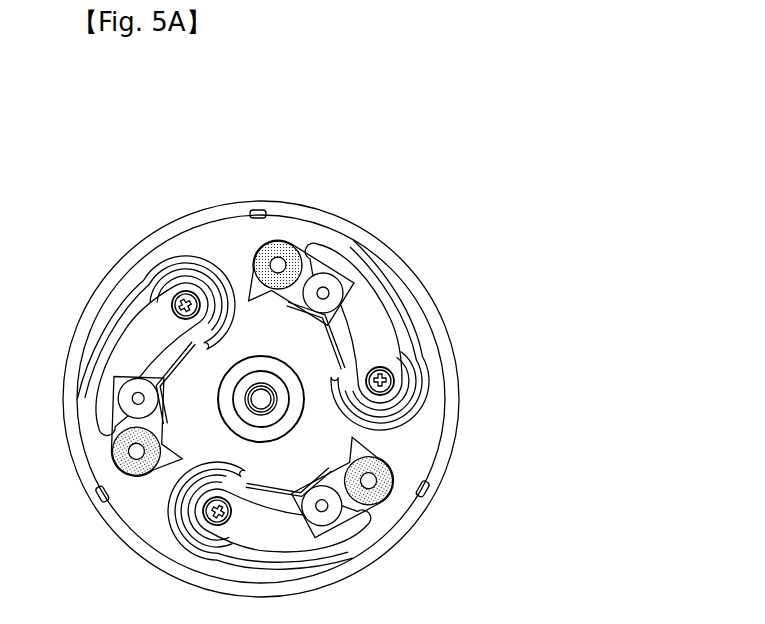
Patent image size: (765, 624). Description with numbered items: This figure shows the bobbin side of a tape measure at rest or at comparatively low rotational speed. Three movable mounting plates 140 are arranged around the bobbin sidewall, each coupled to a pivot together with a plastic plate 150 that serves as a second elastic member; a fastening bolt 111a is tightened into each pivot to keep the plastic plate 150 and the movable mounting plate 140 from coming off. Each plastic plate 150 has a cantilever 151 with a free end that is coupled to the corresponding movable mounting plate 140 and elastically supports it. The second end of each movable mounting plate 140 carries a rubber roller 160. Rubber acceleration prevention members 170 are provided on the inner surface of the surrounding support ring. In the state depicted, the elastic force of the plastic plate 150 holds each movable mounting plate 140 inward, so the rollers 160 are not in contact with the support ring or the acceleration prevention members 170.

The fastening bolt 111a is at (393, 380).
The movable mounting plate 140 is at (370, 282).
The plastic plate 150 is at (393, 310).
The cantilever 151 is at (397, 343).
The roller 160 is at (318, 235).
The acceleration prevention member 170 is at (259, 210).